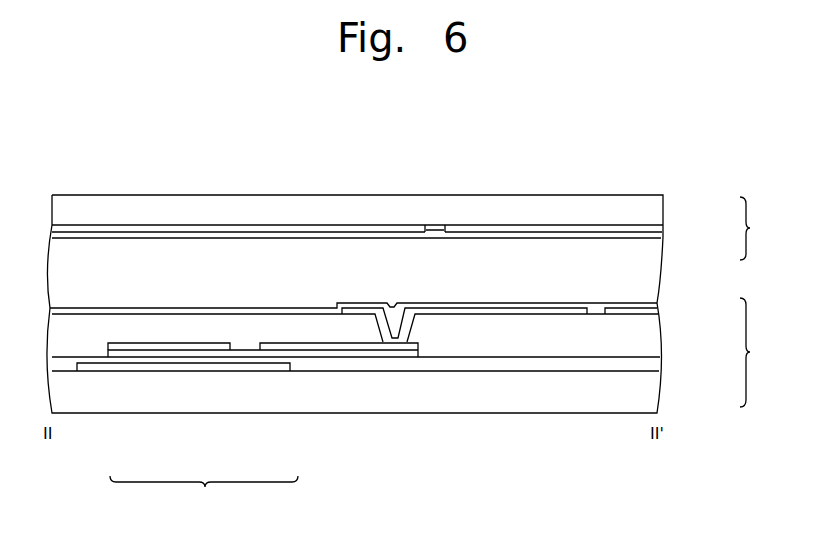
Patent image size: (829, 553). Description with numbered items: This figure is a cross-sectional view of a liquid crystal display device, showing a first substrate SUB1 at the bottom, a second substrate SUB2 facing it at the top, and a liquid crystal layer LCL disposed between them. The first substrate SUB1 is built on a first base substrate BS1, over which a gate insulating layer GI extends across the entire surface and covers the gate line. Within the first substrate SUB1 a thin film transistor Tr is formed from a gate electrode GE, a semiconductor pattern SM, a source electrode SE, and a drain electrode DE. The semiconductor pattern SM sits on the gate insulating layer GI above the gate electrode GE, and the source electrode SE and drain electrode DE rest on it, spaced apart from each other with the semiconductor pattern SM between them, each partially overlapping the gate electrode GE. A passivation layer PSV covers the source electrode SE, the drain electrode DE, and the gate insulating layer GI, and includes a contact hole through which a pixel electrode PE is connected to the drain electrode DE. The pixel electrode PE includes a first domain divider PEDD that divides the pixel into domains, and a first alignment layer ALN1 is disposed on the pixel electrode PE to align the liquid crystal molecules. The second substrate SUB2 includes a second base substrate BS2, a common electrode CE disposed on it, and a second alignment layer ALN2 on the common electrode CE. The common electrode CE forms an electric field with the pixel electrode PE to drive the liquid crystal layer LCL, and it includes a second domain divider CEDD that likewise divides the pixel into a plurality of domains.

The second base substrate BS2 is at (655, 207).
The common electrode CE is at (667, 230).
The second domain divider CEDD is at (433, 225).
The second alignment layer ALN2 is at (667, 239).
The liquid crystal layer LCL is at (655, 272).
The second substrate SUB2 is at (768, 228).
The first alignment layer ALN1 is at (653, 305).
The pixel electrode PE is at (460, 316).
The first domain divider PEDD is at (593, 315).
The passivation layer PSV is at (652, 332).
The source electrode SE is at (178, 345).
The drain electrode DE is at (283, 348).
The semiconductor pattern SM is at (227, 352).
The gate insulating layer GI is at (652, 363).
The gate electrode GE is at (122, 372).
The first base substrate BS1 is at (652, 395).
The first substrate SUB1 is at (768, 352).
The thin film transistor Tr is at (204, 495).